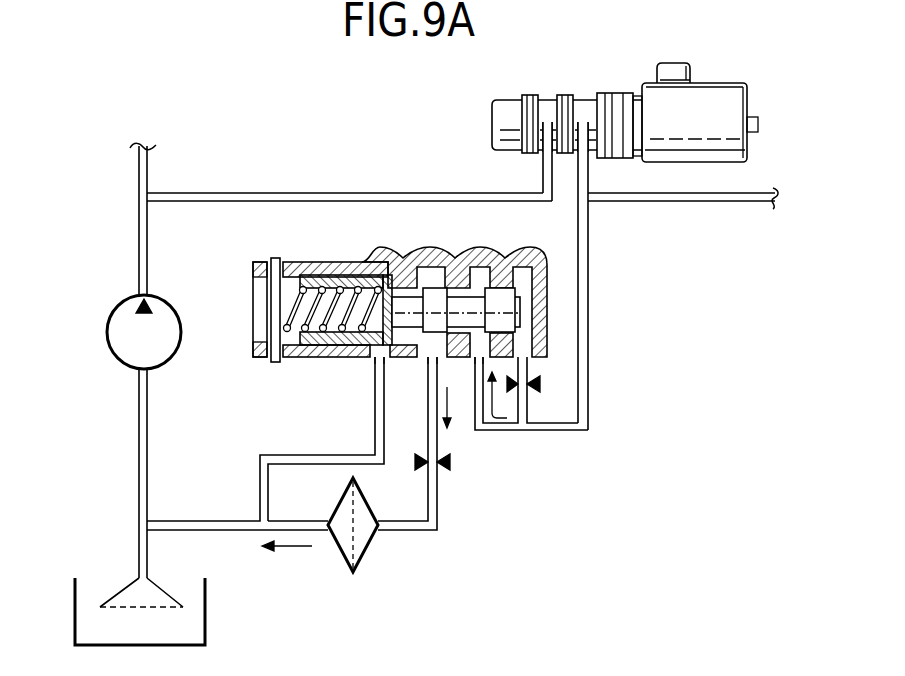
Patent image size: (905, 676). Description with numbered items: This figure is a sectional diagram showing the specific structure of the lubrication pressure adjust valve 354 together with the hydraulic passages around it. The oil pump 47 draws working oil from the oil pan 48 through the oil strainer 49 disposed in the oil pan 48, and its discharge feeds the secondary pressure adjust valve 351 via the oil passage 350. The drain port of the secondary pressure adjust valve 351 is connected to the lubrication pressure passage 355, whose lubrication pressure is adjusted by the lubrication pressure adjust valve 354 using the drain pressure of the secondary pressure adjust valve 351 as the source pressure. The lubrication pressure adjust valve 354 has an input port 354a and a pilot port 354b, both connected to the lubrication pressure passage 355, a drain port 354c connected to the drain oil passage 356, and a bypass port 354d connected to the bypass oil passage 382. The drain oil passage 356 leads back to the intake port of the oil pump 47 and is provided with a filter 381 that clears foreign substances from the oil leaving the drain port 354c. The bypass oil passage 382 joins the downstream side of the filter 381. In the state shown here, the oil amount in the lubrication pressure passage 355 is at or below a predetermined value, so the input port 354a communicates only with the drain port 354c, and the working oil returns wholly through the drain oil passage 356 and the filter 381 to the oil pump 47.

The oil pump 47 is at (108, 331).
The oil pan 48 is at (207, 615).
The oil strainer 49 is at (118, 589).
The oil passage 350 is at (270, 193).
The secondary pressure adjust valve 351 is at (718, 97).
The lubrication pressure adjust valve 354 is at (378, 251).
The input port 354a is at (458, 358).
The pilot port 354b is at (530, 352).
The drain port 354c is at (410, 357).
The bypass port 354d is at (360, 357).
The lubrication pressure passage 355 is at (652, 201).
The drain oil passage 356 is at (440, 506).
The filter 381 is at (366, 552).
The bypass oil passage 382 is at (282, 455).